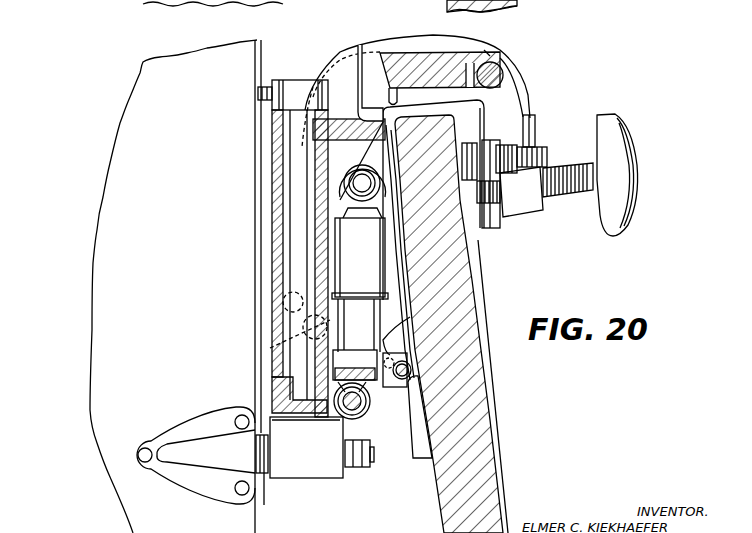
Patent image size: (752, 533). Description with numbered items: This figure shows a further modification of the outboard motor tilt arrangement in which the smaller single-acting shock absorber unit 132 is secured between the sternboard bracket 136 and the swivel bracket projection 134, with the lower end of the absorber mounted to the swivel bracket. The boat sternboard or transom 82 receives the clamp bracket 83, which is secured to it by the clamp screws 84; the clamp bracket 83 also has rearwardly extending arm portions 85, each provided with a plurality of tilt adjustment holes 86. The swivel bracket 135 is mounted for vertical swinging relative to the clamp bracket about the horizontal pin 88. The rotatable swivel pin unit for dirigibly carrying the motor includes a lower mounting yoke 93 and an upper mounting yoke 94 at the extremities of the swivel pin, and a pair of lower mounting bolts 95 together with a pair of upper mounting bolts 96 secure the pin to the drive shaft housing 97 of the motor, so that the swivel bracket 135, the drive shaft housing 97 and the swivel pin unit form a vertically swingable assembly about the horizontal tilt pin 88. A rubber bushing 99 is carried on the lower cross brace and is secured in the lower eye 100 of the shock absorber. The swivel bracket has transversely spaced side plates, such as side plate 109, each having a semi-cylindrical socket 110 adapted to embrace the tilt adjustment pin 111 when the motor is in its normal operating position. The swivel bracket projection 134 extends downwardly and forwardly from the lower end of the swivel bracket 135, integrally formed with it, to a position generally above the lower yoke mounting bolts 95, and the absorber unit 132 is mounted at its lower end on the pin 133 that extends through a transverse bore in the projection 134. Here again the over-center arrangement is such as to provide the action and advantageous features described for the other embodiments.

The boat sternboard or transom 82 is at (470, 283).
The clamp bracket 83 is at (527, 96).
The clamp screws 84 is at (587, 187).
The arm portions 85 is at (270, 348).
The tilt adjustment holes 86 is at (262, 292).
The horizontal pin 88 is at (505, 70).
The lower mounting yoke 93 is at (313, 478).
The upper mounting yoke 94 is at (297, 88).
The lower mounting bolts 95 is at (263, 492).
The upper mounting bolts 96 is at (258, 94).
The drive shaft housing 97 is at (98, 228).
The rubber bushing 99 is at (335, 420).
The lower eye 100 is at (337, 403).
The side plate 109 is at (400, 357).
The semi-cylindrical socket 110 is at (407, 380).
The tilt adjustment pin 111 is at (409, 373).
The single-acting shock absorber unit 132 is at (396, 309).
The pin 133 is at (360, 406).
The swivel bracket projection 134 is at (358, 420).
The swivel bracket 135 is at (487, 53).
The sternboard bracket 136 is at (487, 193).